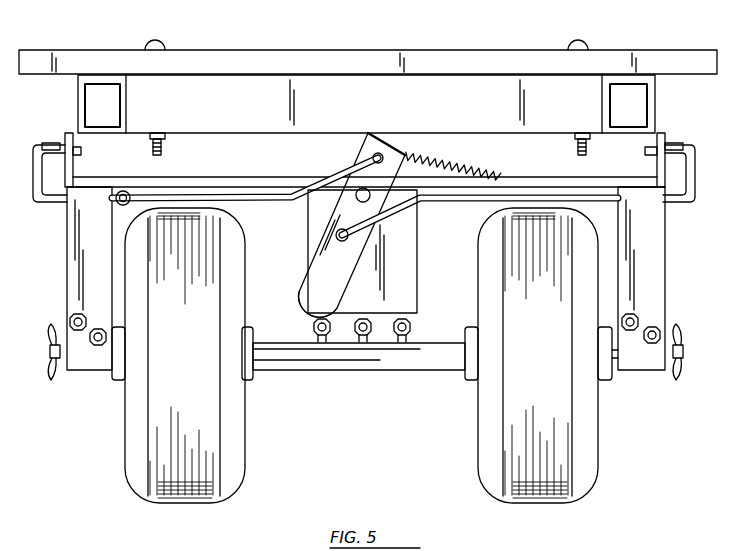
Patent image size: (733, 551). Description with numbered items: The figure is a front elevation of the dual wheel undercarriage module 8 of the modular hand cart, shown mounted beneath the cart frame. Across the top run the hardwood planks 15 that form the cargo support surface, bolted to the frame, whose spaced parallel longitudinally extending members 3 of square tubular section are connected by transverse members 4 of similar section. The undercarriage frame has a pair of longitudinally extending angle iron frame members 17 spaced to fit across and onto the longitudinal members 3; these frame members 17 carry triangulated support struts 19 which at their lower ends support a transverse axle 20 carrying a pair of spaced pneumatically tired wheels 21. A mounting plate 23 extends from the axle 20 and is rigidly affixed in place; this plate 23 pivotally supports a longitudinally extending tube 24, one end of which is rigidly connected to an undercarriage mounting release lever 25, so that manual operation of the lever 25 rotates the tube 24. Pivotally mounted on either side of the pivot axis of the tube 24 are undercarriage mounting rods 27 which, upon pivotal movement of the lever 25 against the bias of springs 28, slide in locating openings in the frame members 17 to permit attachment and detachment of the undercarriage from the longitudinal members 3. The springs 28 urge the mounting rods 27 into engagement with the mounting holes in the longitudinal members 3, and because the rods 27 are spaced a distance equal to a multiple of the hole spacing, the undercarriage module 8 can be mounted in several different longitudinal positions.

The longitudinally extending members 3 is at (78, 100).
The transverse members 4 is at (203, 116).
The undercarriage module 8 is at (318, 465).
The hardwood planks 15 is at (88, 60).
The angle iron frame members 17 is at (68, 172).
The triangulated support struts 19 is at (72, 275).
The transverse axle 20 is at (288, 358).
The pneumatically tired wheels 21 is at (143, 487).
The mounting plate 23 is at (413, 290).
The tube 24 is at (356, 197).
The undercarriage mounting release lever 25 is at (301, 303).
The undercarriage mounting rods 27 is at (263, 201).
The springs 28 is at (468, 166).